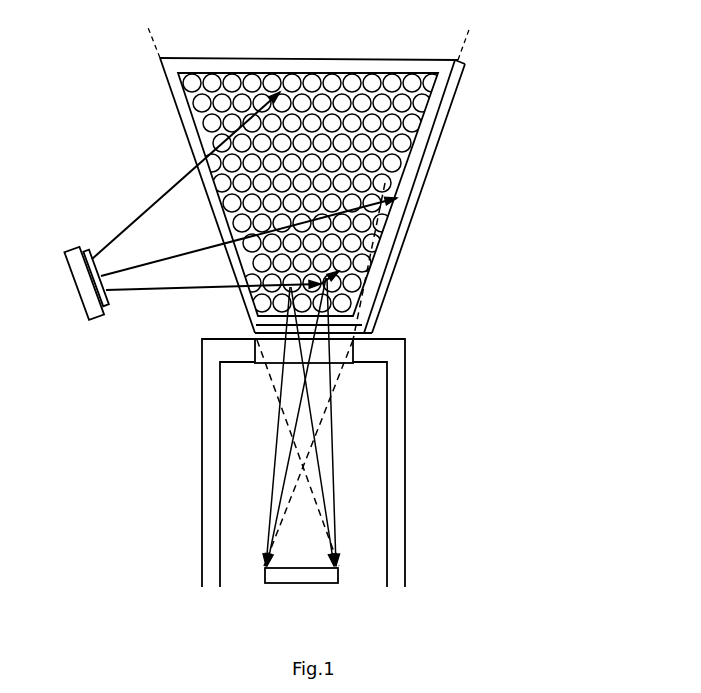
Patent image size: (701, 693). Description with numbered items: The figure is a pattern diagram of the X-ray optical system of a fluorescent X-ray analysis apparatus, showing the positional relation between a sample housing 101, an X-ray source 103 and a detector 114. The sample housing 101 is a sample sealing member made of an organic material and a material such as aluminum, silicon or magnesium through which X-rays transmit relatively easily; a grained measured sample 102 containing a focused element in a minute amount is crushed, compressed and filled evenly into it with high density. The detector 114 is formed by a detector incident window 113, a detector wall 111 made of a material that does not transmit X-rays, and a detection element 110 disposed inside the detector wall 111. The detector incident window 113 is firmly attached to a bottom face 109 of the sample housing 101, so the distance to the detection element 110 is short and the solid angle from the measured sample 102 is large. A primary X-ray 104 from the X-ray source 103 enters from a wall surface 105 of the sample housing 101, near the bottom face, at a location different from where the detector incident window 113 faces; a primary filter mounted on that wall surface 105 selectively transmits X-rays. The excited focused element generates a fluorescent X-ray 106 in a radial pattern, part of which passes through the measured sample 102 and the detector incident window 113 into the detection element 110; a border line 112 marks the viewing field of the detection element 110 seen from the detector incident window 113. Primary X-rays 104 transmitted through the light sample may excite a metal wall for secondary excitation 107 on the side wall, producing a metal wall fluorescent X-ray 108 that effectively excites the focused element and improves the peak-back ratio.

The sample housing 101 is at (163, 65).
The measured sample 102 is at (195, 157).
The X-ray source 103 is at (88, 302).
The primary X-ray 104 is at (183, 288).
The wall surface (primary filter) 105 is at (197, 207).
The fluorescent X-ray 106 is at (290, 393).
The metal wall for secondary excitation 107 is at (437, 142).
The metal wall fluorescent X-ray 108 is at (339, 271).
The bottom face 109 is at (337, 333).
The detection element 110 is at (333, 573).
The detector wall 111 is at (398, 432).
The border line of viewing field 112 is at (290, 432).
The detector incident window 113 is at (353, 363).
The detector 114 is at (394, 463).